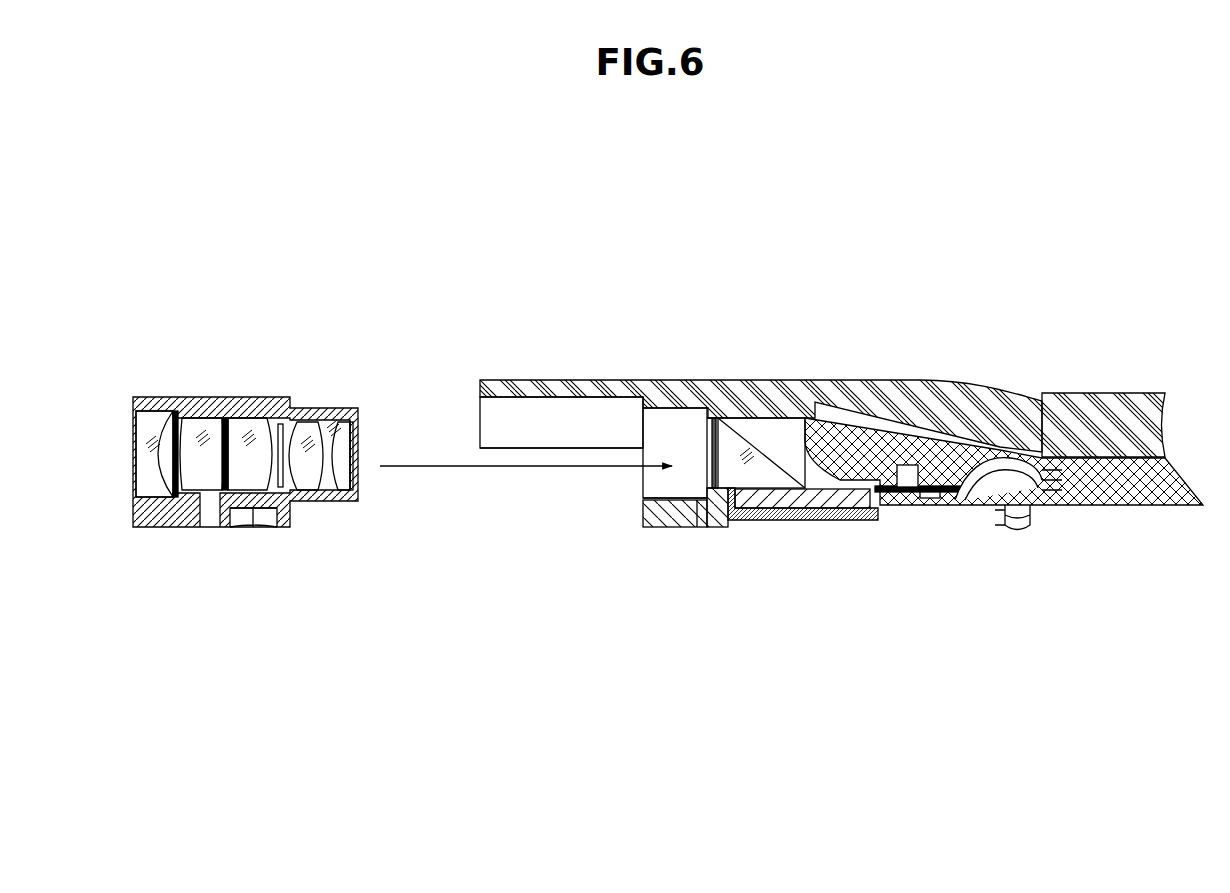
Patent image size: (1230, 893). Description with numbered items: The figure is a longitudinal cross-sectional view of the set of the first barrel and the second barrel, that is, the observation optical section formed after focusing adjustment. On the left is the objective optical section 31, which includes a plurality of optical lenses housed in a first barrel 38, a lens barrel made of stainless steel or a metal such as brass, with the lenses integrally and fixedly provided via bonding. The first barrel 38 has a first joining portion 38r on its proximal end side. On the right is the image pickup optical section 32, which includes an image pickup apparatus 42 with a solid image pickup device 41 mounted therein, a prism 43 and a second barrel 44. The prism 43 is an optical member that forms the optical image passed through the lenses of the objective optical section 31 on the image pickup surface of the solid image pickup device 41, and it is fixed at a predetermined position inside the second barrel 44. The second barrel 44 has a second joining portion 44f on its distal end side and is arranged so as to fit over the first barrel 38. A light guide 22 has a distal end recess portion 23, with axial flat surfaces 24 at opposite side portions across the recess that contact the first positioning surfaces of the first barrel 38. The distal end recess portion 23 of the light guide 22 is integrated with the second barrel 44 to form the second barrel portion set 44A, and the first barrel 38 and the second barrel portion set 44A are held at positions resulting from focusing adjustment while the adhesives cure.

The light guide 22 is at (855, 398).
The distal end recess portion 23 is at (541, 402).
The axial flat surfaces 24 is at (495, 449).
The objective optical section 31 is at (253, 552).
The image pickup optical section 32 is at (722, 538).
The first barrel 38 is at (275, 397).
The first joining portion 38r is at (215, 395).
The solid image pickup device 41 is at (802, 504).
The image pickup apparatus 42 is at (833, 524).
The prism 43 is at (760, 489).
The second barrel 44 is at (731, 397).
The second barrel portion set 44A is at (862, 206).
The second joining portion 44f is at (661, 496).